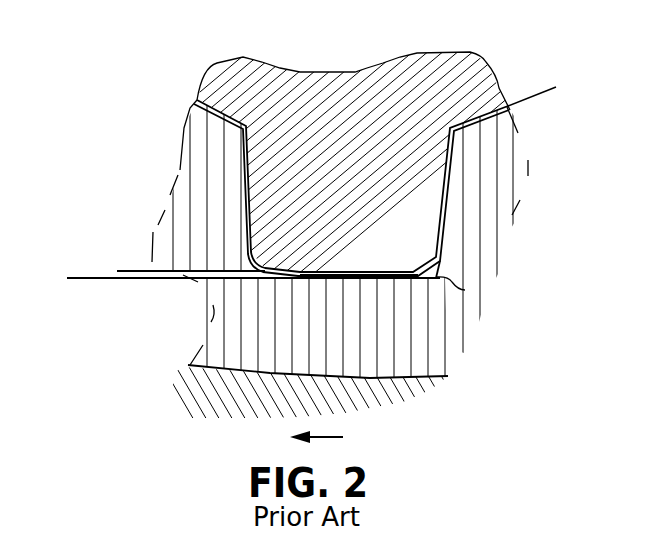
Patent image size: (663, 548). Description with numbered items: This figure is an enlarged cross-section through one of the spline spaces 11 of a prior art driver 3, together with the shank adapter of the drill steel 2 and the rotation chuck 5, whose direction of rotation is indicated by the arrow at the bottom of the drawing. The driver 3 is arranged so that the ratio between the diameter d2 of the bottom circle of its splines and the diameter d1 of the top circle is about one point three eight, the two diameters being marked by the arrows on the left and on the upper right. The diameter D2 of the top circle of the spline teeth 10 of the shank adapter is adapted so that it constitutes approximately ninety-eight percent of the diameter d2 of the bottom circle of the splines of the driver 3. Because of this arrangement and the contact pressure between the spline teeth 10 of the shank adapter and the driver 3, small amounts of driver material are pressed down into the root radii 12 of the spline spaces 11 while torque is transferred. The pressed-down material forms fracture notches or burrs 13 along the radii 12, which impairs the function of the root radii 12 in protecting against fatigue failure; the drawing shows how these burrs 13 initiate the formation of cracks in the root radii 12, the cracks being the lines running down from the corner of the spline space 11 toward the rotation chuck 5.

The drill steel 2 is at (350, 153).
The driver 3 is at (320, 322).
The rotation chuck 5 is at (227, 393).
The spline teeth 10 is at (487, 120).
The spline space 11 is at (357, 274).
The root radii 12 is at (436, 278).
The burrs 13 is at (435, 276).
The diameter of the top circle d1 is at (545, 78).
The diameter of the bottom circle d2 is at (75, 264).
The diameter of the top circle of the spline teeth of the shank adapter D2 is at (123, 258).